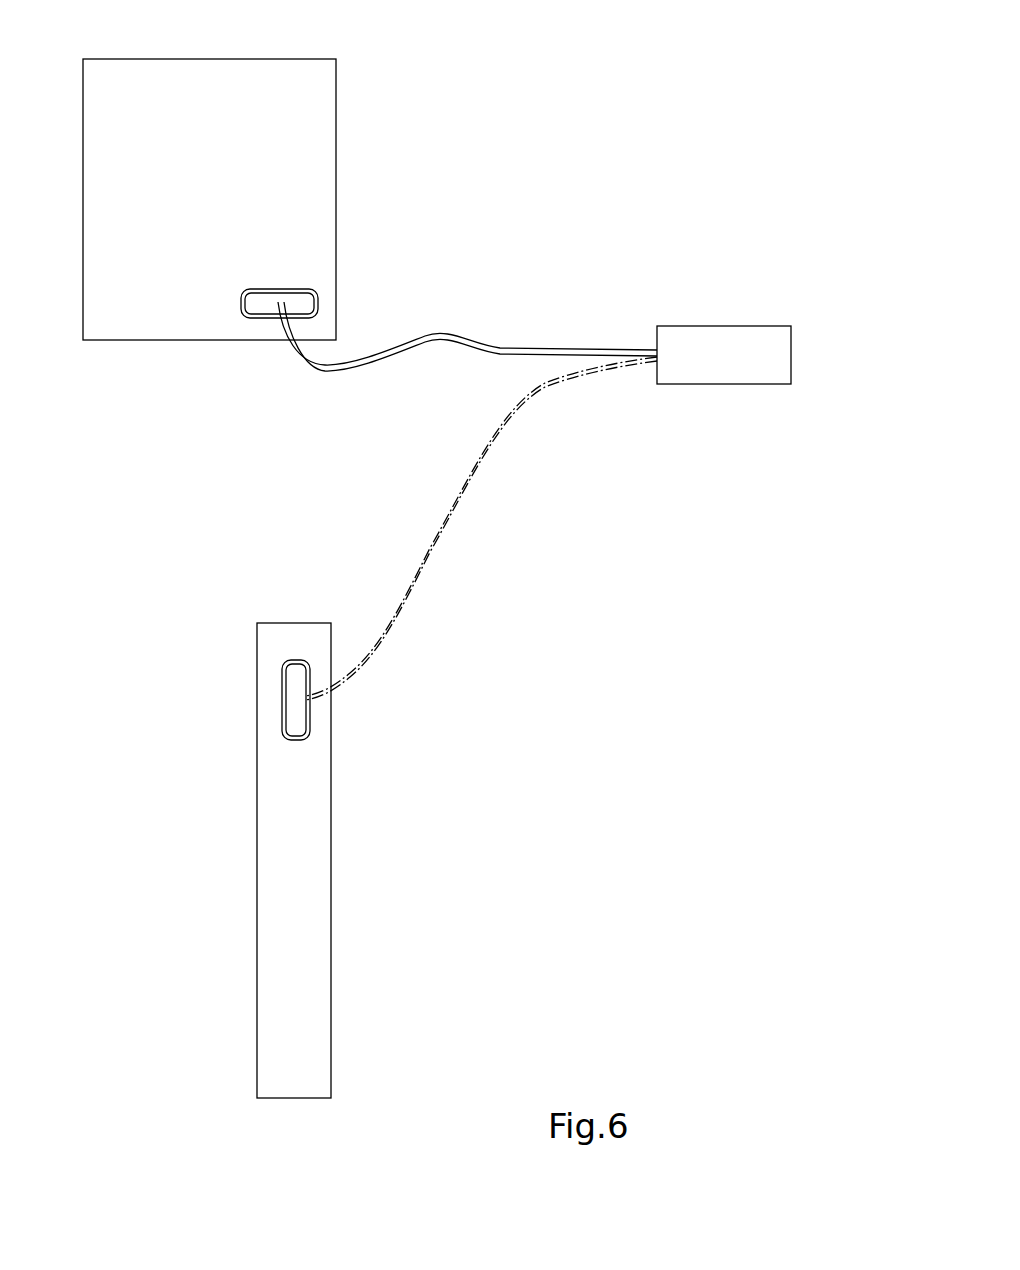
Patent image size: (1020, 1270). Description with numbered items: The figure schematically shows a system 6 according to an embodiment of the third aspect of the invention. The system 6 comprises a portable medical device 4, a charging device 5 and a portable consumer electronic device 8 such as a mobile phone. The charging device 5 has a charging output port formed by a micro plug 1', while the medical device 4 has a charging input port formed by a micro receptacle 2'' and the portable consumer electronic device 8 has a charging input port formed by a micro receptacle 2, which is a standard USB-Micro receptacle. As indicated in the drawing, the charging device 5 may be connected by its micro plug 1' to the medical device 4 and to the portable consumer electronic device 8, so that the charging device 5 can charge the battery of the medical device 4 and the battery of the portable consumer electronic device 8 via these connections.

The micro plug 1' is at (428, 524).
The micro receptacle 2 is at (255, 698).
The micro receptacle 2'' is at (279, 270).
The portable medical device 4 is at (143, 70).
The charging device 5 is at (756, 338).
The system 6 is at (622, 105).
The portable consumer electronic device 8 is at (275, 862).